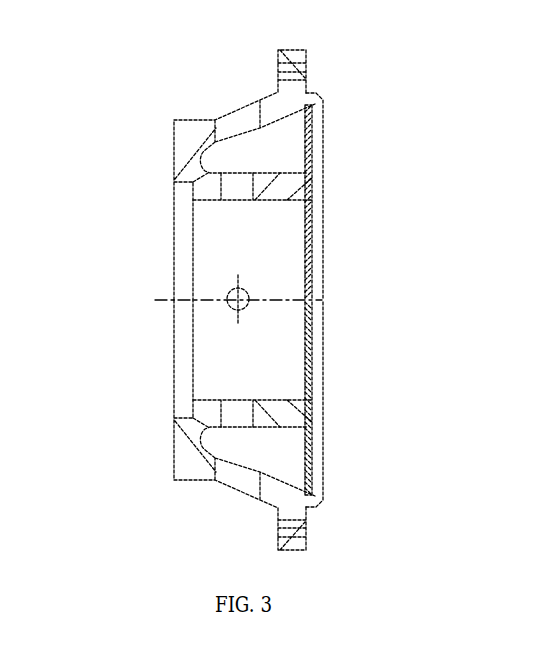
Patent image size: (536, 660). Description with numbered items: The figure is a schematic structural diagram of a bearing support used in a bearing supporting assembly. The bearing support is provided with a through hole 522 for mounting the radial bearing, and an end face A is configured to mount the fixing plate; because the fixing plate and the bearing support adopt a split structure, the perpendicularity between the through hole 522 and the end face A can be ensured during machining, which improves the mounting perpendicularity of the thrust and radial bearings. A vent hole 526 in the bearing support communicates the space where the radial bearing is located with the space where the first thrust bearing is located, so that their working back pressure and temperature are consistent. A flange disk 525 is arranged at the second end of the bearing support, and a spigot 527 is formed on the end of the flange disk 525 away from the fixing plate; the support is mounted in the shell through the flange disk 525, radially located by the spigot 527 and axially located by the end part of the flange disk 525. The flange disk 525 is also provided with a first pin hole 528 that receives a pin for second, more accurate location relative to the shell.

The end face A is at (173, 156).
The through hole 522 is at (281, 232).
The flange disk 525 is at (262, 122).
The vent hole 526 is at (240, 297).
The spigot 527 is at (318, 96).
The first pin hole 528 is at (290, 535).